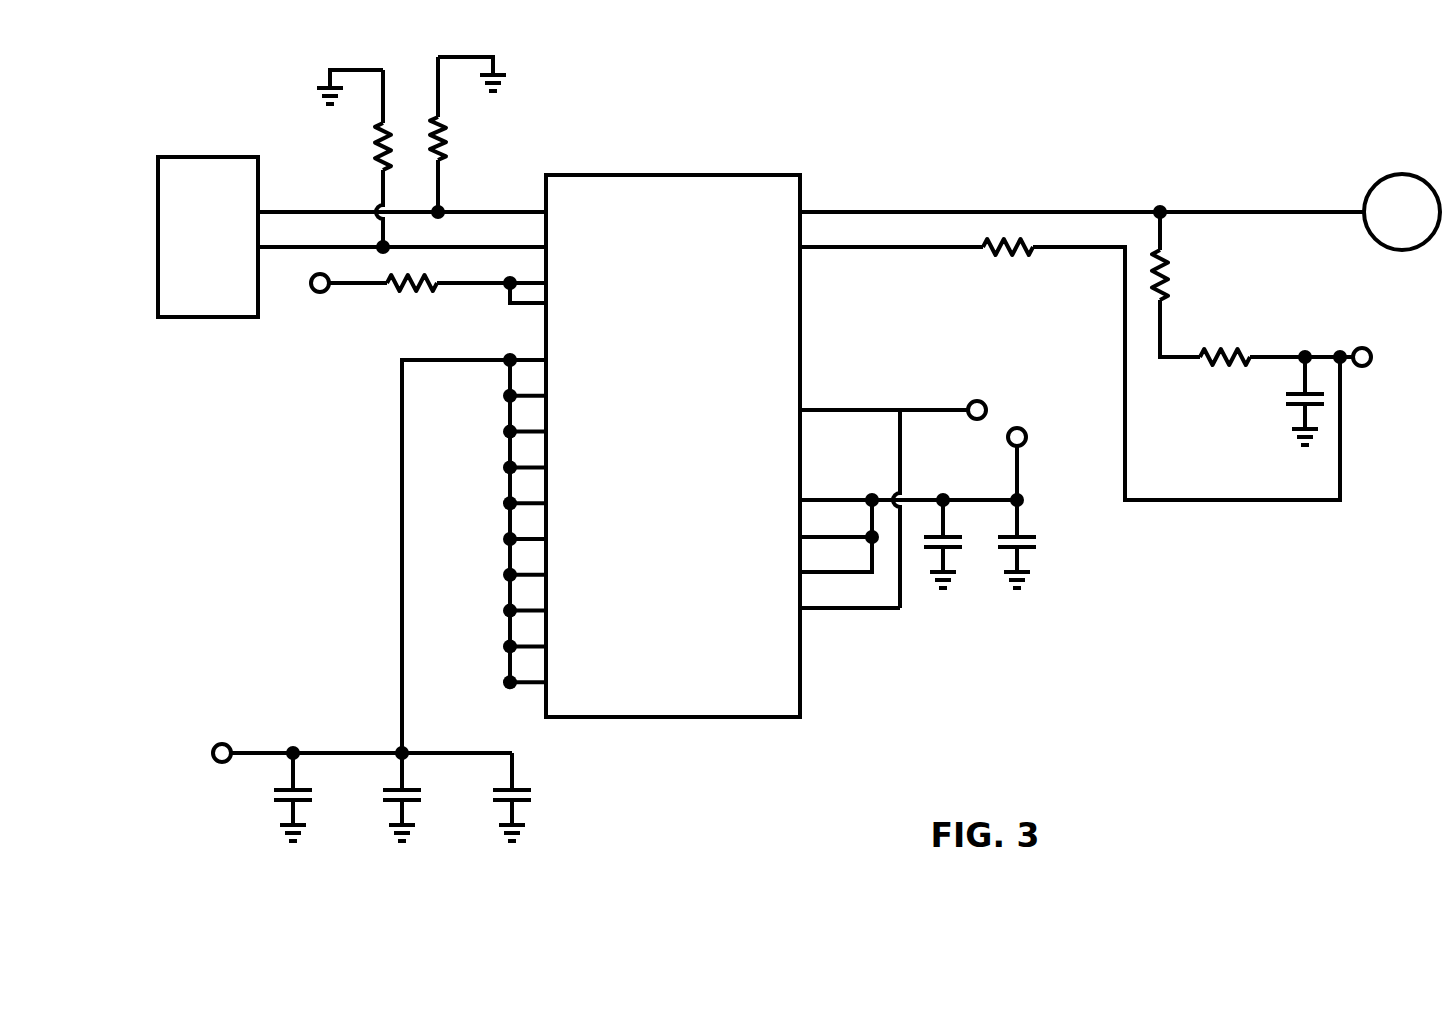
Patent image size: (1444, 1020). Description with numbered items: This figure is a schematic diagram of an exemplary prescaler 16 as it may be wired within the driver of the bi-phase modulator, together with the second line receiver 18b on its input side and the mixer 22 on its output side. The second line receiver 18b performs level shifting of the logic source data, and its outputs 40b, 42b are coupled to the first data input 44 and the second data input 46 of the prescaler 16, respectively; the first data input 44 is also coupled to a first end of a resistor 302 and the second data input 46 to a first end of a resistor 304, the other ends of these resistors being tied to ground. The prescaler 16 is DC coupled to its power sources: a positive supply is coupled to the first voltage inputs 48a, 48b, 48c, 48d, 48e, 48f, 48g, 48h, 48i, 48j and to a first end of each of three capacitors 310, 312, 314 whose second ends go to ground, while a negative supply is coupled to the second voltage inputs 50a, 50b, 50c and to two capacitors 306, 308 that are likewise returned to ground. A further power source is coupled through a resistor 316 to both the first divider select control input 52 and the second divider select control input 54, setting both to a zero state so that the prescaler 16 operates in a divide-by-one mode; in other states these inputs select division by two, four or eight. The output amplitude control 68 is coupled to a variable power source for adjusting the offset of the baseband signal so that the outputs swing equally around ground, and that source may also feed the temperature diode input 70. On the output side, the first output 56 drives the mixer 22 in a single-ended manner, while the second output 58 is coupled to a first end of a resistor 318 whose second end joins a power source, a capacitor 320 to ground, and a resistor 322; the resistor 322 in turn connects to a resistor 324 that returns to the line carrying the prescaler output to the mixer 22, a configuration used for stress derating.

The second line receiver 18b is at (208, 237).
The output of the second line receiver 40b is at (259, 207).
The output of the second line receiver 42b is at (262, 249).
The first data input 44 is at (547, 210).
The second data input 46 is at (547, 241).
The first voltage input 48a is at (541, 355).
The first voltage input 48b is at (543, 395).
The first voltage input 48c is at (543, 431).
The first voltage input 48d is at (543, 466).
The first voltage input 48e is at (543, 502).
The first voltage input 48f is at (543, 538).
The first voltage input 48g is at (543, 574).
The first voltage input 48h is at (543, 610).
The first voltage input 48i is at (543, 645).
The first voltage input 48j is at (543, 681).
The second voltage input 50a is at (802, 497).
The second voltage input 50b is at (802, 533).
The second voltage input 50c is at (803, 573).
The first divider select control input 52 is at (547, 280).
The second divider select control input 54 is at (546, 302).
The first output 56 is at (802, 212).
The second output 58 is at (802, 248).
The output amplitude control 68 is at (802, 410).
The temperature diode input 70 is at (803, 612).
The prescaler 16 is at (673, 446).
The mixer 22 is at (1402, 212).
The resistor 302 is at (442, 118).
The resistor 304 is at (380, 163).
The capacitor 306 is at (962, 547).
The capacitor 308 is at (1037, 537).
The capacitor 310 is at (275, 792).
The capacitor 312 is at (383, 797).
The capacitor 314 is at (530, 790).
The resistor 316 is at (387, 284).
The resistor 318 is at (984, 250).
The capacitor 320 is at (1288, 395).
The resistor 322 is at (1205, 362).
The resistor 324 is at (1167, 253).